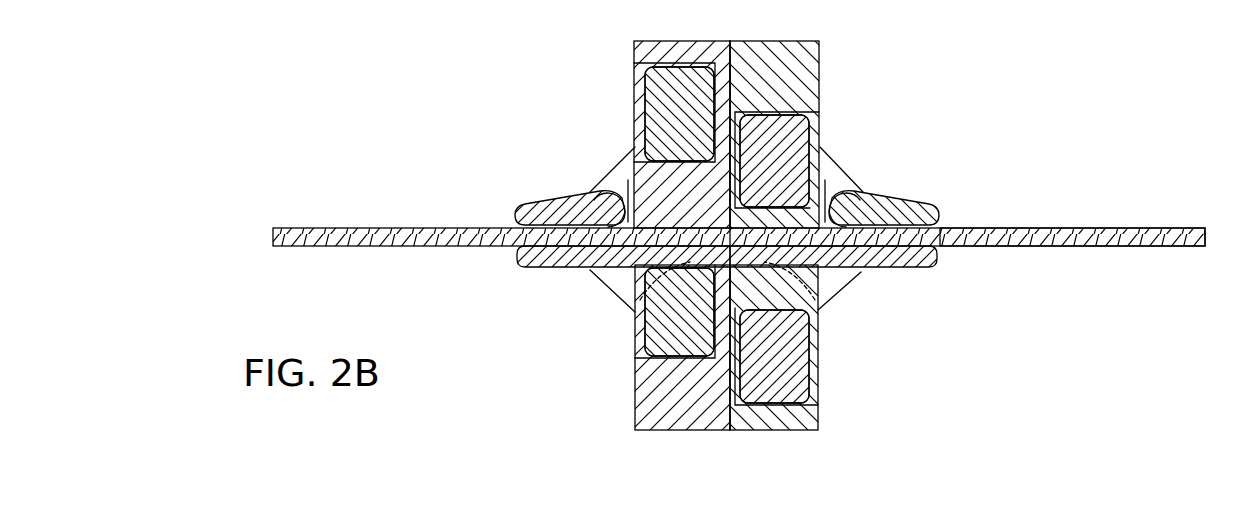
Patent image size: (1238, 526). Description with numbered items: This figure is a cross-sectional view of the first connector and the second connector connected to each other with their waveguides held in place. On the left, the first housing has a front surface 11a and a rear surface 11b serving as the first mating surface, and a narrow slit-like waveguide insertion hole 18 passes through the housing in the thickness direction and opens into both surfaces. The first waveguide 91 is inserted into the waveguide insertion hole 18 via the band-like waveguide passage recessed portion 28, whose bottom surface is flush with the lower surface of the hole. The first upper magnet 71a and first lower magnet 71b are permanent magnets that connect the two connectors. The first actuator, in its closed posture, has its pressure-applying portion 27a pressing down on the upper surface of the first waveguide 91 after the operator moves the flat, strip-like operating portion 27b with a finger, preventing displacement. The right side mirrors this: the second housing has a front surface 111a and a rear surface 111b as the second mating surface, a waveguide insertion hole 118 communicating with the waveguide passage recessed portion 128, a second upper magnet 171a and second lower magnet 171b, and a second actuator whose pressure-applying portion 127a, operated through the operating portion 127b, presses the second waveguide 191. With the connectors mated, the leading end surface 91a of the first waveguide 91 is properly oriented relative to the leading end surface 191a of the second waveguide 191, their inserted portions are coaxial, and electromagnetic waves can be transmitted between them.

The front surface 11a is at (635, 425).
The rear surface 11b is at (727, 41).
The front surface 111a is at (820, 425).
The rear surface 111b is at (742, 46).
The first upper magnet 71a is at (635, 78).
The first lower magnet 71b is at (648, 343).
The second upper magnet 171a is at (798, 112).
The second lower magnet 171b is at (800, 372).
The first waveguide 91 is at (330, 227).
The second waveguide 191 is at (1069, 227).
The leading end surface 91a is at (640, 302).
The leading end surface 191a is at (818, 302).
The waveguide insertion hole 18 is at (600, 264).
The waveguide insertion hole 118 is at (858, 264).
The pressure-applying portion 27a is at (600, 192).
The operating portion 27b is at (565, 196).
The pressure-applying portion 127a is at (852, 192).
The operating portion 127b is at (890, 196).
The waveguide passage recessed portion 28 is at (628, 205).
The waveguide passage recessed portion 128 is at (825, 205).